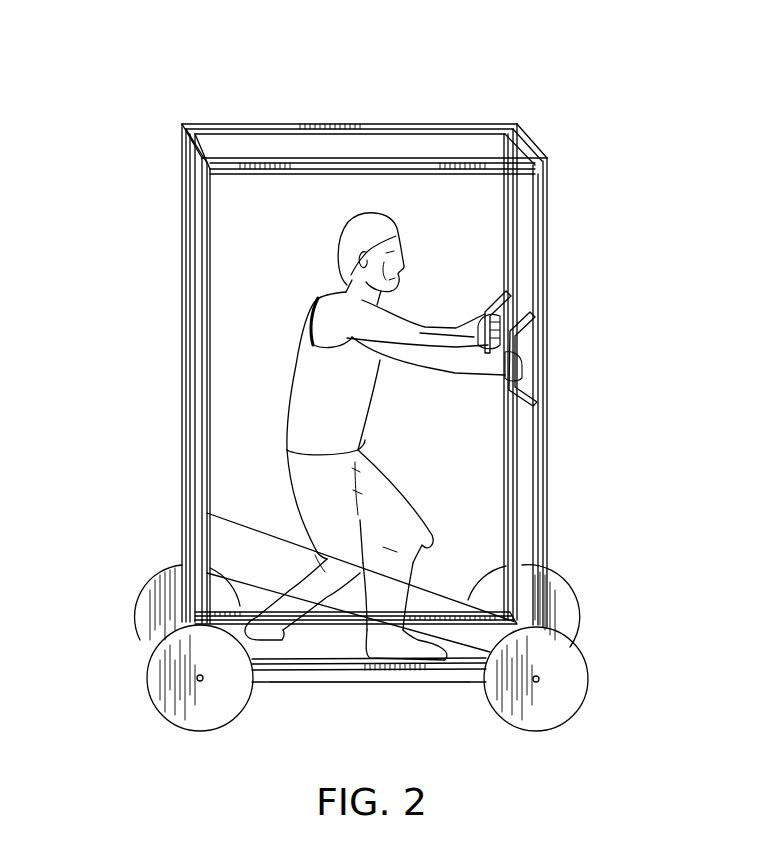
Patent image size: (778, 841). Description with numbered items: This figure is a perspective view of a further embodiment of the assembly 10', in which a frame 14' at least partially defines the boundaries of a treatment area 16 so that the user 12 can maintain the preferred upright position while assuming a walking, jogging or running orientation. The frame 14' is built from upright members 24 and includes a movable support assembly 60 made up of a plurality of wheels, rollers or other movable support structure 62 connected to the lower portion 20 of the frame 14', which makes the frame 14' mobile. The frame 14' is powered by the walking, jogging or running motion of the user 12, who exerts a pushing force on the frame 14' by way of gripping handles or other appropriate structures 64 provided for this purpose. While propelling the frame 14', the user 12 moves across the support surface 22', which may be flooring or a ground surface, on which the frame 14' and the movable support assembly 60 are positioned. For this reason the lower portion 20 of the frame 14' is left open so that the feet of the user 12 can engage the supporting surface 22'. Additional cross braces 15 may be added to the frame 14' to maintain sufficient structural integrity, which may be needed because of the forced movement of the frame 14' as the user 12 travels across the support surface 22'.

The exercise apparatus 10' is at (357, 93).
The frame 14' is at (416, 168).
The frame posts 24 is at (182, 276).
The treatment area 16 is at (298, 226).
The gripping handles 64 is at (494, 297).
The user 12 is at (352, 393).
The cross braces 15 is at (452, 583).
The support surface 22' is at (356, 678).
The movable support assembly 60 is at (600, 636).
The lower portion 20 is at (295, 686).
The wheels 62 is at (136, 609).